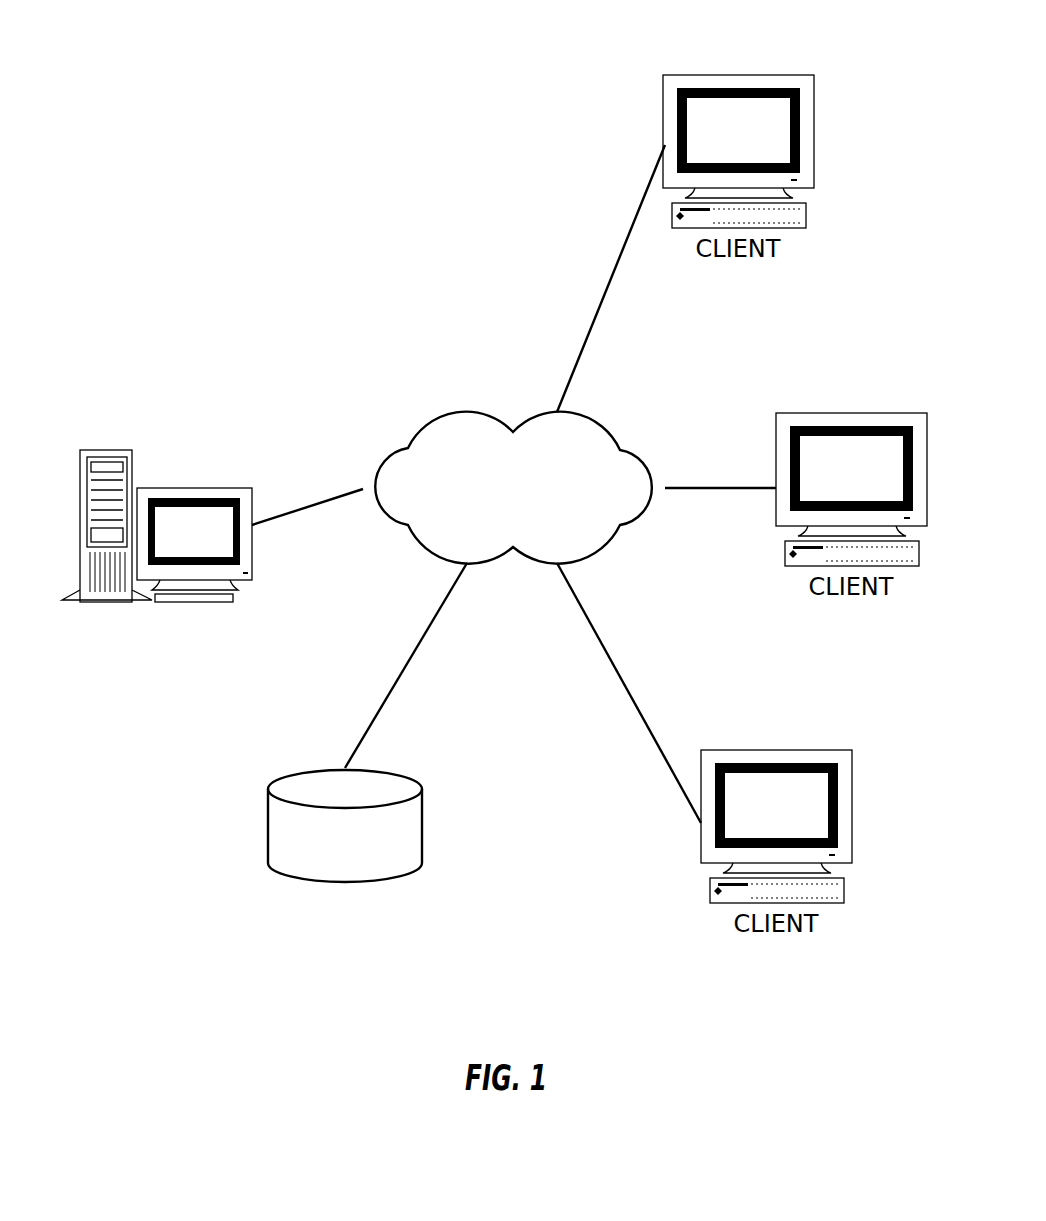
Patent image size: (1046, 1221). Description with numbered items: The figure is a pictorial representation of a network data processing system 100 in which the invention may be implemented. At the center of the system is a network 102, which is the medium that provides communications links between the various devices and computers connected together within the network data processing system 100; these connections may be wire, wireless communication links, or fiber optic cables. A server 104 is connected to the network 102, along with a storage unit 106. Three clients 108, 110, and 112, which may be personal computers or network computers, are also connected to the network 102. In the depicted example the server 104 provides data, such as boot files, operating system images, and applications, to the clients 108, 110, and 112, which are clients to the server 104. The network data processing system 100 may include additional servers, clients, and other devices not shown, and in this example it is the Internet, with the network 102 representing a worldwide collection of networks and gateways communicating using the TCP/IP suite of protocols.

The network data processing system 100 is at (533, 830).
The network 102 is at (467, 412).
The server 104 is at (155, 495).
The storage unit 106 is at (327, 870).
The client 108 is at (673, 85).
The client 110 is at (787, 422).
The client 112 is at (843, 762).